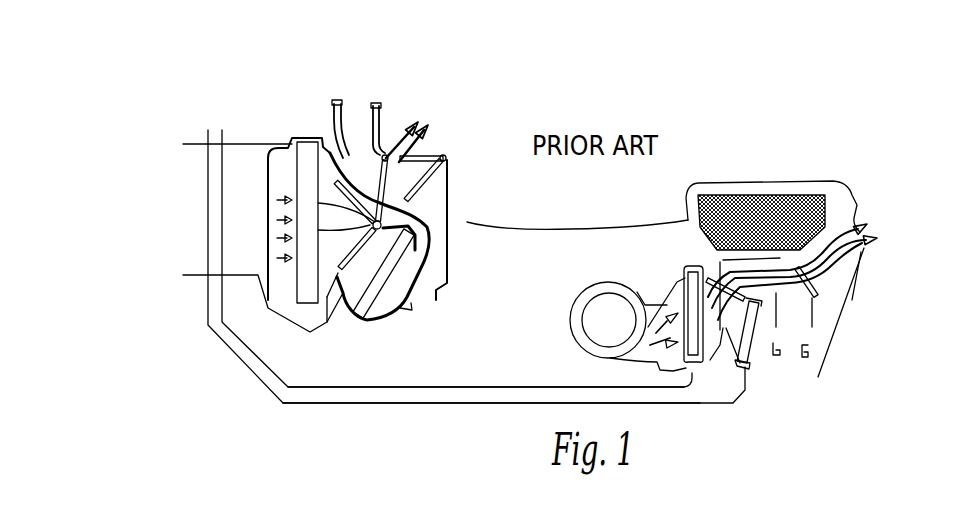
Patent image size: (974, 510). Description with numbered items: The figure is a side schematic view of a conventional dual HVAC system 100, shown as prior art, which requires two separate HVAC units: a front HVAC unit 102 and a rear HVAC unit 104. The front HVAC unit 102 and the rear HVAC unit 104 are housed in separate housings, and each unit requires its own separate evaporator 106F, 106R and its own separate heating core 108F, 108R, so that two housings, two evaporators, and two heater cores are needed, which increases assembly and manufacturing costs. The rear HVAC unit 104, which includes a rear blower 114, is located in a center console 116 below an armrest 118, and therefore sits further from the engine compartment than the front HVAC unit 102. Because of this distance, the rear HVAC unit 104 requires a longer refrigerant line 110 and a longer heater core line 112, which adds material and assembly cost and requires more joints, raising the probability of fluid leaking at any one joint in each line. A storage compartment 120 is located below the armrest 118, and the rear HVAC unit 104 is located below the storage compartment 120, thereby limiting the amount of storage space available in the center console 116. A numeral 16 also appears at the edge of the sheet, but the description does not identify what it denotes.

The conventional dual HVAC system 100 is at (724, 140).
The front HVAC unit 102 is at (254, 108).
The rear HVAC unit 104 is at (874, 201).
The evaporator 106F is at (305, 140).
The evaporator 106R is at (703, 360).
The heating core 108F is at (372, 297).
The heating core 108R is at (750, 343).
The refrigerant line 110 is at (634, 389).
The heater core line 112 is at (455, 404).
The rear blower 114 is at (603, 282).
The center console 116 is at (570, 228).
The armrest 118 is at (803, 178).
The storage compartment 120 is at (735, 208).
The reference numeral (adjacent figure) 16 is at (222, 509).